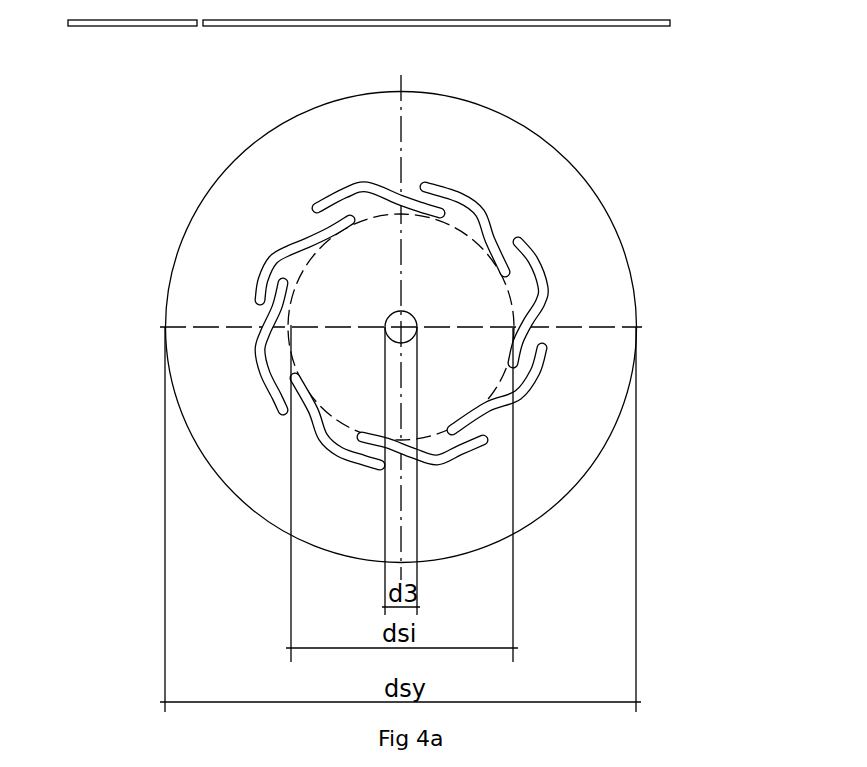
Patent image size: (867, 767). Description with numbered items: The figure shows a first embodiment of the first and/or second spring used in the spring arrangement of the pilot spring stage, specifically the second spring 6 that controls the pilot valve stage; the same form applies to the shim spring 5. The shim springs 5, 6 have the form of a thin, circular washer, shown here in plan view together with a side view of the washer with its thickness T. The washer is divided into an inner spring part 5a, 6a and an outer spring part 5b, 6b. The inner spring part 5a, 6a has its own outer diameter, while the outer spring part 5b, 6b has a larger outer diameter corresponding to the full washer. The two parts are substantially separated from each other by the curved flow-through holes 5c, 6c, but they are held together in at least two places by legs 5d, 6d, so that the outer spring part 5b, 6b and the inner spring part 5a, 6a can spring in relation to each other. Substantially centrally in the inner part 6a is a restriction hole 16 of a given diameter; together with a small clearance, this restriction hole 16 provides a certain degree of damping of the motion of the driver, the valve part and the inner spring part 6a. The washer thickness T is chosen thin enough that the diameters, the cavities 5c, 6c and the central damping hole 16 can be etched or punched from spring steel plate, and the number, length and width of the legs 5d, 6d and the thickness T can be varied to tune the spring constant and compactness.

The first shim spring 5 is at (433, 318).
The second shim spring 6 is at (602, 110).
The inner spring part 5a is at (597, 423).
The inner spring part 6a is at (443, 374).
The outer spring part 5b is at (531, 327).
The outer spring part 6b is at (587, 287).
The flow-through holes 5c is at (574, 205).
The flow-through holes 6c is at (485, 232).
The legs 5d is at (630, 278).
The legs 6d is at (517, 260).
The restriction hole 16 is at (416, 332).
The thickness T is at (68, 8).